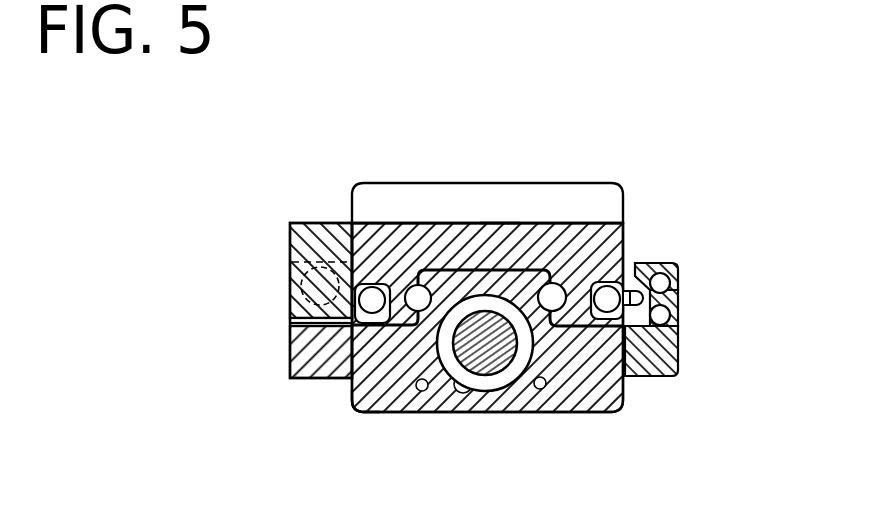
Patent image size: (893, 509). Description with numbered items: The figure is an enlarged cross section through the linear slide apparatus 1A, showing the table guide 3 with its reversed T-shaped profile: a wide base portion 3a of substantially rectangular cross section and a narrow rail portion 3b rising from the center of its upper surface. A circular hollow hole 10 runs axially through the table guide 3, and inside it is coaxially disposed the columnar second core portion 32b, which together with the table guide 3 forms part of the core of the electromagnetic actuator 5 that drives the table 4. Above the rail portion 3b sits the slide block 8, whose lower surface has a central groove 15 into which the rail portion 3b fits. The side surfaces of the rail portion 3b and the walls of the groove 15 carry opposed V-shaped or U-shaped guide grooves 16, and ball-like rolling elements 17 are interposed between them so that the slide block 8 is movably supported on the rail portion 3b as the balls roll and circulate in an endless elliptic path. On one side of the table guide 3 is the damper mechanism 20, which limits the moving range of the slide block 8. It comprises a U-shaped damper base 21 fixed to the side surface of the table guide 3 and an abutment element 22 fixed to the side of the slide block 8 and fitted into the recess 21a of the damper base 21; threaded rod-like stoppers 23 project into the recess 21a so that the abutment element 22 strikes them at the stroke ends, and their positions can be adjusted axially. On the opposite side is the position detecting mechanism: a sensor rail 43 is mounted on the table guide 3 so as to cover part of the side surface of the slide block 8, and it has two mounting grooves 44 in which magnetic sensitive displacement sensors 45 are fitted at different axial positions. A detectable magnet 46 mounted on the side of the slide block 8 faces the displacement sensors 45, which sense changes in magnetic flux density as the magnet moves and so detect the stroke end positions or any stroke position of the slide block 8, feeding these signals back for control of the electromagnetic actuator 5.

The linear slide apparatus 1A is at (522, 233).
The table guide 3 is at (432, 436).
The base portion 3a is at (366, 390).
The rail portion 3b is at (497, 290).
The table 4 is at (574, 177).
The electromagnetic actuator 5 is at (491, 433).
The slide block 8 is at (592, 240).
The hollow hole 10 is at (477, 393).
The groove 15 is at (462, 268).
The guide grooves 16 is at (412, 286).
The rolling elements 17 is at (420, 392).
The damper mechanism 20 is at (277, 223).
The damper base 21 is at (310, 352).
The recess 21a is at (302, 321).
The abutment element 22 is at (312, 248).
The stoppers 23 is at (292, 296).
The second core portion 32b is at (498, 357).
The sensor rail 43 is at (664, 365).
The mounting grooves 44 is at (660, 272).
The displacement sensors 45 is at (672, 283).
The detectable magnet 46 is at (643, 300).